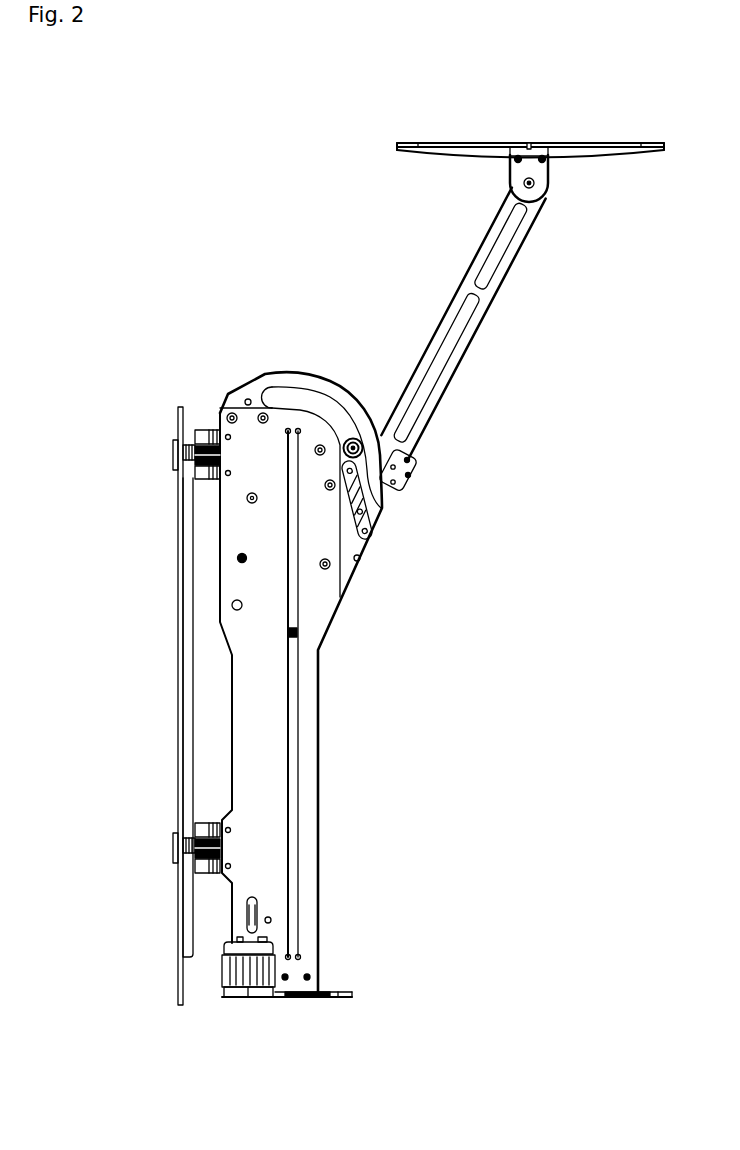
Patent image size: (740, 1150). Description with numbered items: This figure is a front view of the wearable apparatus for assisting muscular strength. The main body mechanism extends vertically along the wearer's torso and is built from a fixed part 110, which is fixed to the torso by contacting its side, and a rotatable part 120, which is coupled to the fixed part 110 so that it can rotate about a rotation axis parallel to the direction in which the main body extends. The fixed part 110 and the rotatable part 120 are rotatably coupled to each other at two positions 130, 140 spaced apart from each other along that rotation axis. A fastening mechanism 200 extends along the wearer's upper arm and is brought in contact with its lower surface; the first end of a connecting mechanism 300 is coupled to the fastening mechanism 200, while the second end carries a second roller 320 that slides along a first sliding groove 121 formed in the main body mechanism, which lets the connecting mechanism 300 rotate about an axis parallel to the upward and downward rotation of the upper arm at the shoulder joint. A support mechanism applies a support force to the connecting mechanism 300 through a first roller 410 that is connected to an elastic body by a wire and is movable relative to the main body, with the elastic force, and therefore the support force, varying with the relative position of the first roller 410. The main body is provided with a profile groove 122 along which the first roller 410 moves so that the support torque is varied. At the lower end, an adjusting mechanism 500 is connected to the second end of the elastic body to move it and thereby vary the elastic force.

The fixed part 110 is at (178, 993).
The rotatable part 120 is at (318, 927).
The first sliding groove 121 is at (293, 763).
The profile groove 122 is at (299, 402).
The rotatable coupling position 130 is at (203, 413).
The rotatable coupling position 140 is at (218, 811).
The fastening mechanism 200 is at (597, 140).
The connecting mechanism 300 is at (486, 337).
The second roller 320 is at (298, 633).
The first roller 410 is at (363, 442).
The adjusting mechanism 500 is at (247, 1008).